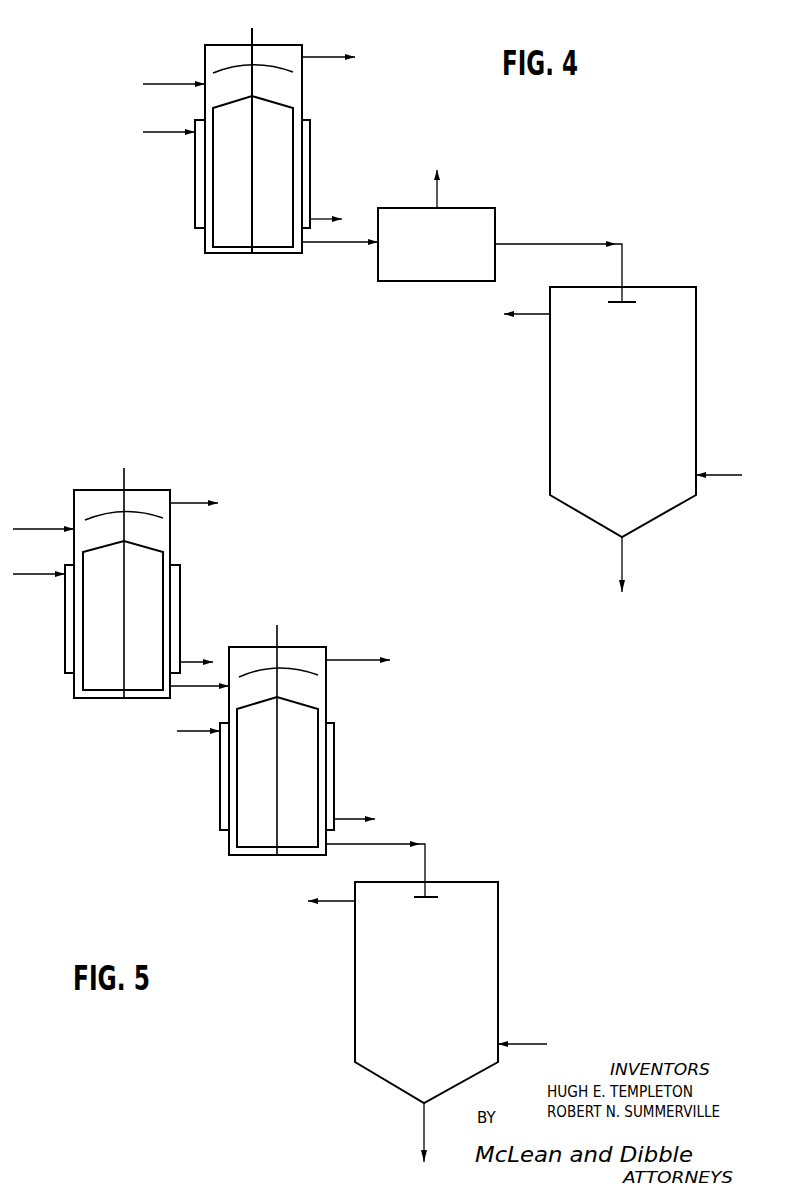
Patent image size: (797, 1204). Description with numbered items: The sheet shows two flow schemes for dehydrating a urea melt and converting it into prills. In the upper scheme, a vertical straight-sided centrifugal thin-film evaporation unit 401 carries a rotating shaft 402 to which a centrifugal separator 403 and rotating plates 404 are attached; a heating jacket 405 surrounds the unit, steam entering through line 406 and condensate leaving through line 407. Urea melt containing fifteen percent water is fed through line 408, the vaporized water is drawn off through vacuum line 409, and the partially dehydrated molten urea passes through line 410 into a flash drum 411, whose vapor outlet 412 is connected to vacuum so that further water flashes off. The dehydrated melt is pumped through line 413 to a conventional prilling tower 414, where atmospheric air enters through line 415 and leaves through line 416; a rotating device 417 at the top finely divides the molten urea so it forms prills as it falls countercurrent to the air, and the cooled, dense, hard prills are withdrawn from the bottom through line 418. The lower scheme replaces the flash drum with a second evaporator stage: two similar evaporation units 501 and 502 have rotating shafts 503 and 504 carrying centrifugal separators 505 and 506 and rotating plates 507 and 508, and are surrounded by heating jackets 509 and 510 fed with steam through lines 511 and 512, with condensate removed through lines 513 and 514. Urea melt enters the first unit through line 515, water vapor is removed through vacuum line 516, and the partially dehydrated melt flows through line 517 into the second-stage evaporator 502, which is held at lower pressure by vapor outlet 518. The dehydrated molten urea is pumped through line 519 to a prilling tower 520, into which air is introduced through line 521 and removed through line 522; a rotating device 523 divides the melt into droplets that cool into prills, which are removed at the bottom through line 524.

In FIG. 4, the centrifugal thin-film evaporation unit 401 is at (272, 45).
In FIG. 4, the rotating shaft 402 is at (252, 38).
In FIG. 4, the centrifugal separator 403 is at (294, 74).
In FIG. 4, the rotating plates 404 is at (243, 188).
In FIG. 4, the heating jacket 405 is at (198, 182).
In FIG. 4, the steam line 406 is at (174, 132).
In FIG. 4, the condensate line 407 is at (323, 219).
In FIG. 4, the urea melt feed line 408 is at (172, 83).
In FIG. 4, the water vapor line 409 is at (310, 57).
In FIG. 4, the partially dehydrated urea line 410 is at (351, 243).
In FIG. 4, the flash drum 411 is at (495, 270).
In FIG. 4, the vapor outlet 412 is at (437, 197).
In FIG. 4, the dehydrated urea line 413 is at (622, 276).
In FIG. 4, the prilling tower 414 is at (696, 402).
In FIG. 4, the air inlet line 415 is at (735, 475).
In FIG. 4, the air outlet line 416 is at (525, 315).
In FIG. 4, the rotating device 417 is at (635, 304).
In FIG. 4, the prill outlet line 418 is at (622, 546).
In FIG. 5, the first-stage centrifugal thin-film evaporation unit 501 is at (170, 476).
In FIG. 5, the second-stage evaporator 502 is at (312, 647).
In FIG. 5, the rotating shaft 503 is at (124, 478).
In FIG. 5, the rotating shaft 504 is at (278, 643).
In FIG. 5, the centrifugal separator 505 is at (162, 519).
In FIG. 5, the centrifugal separator 506 is at (318, 676).
In FIG. 5, the rotating plates 507 is at (109, 630).
In FIG. 5, the rotating plates 508 is at (267, 785).
In FIG. 5, the heating jacket 509 is at (69, 637).
In FIG. 5, the heating jacket 510 is at (225, 773).
In FIG. 5, the steam line 511 is at (39, 575).
In FIG. 5, the steam line 512 is at (197, 732).
In FIG. 5, the condensate line 513 is at (188, 659).
In FIG. 5, the condensate line 514 is at (352, 818).
In FIG. 5, the urea melt feed line 515 is at (43, 529).
In FIG. 5, the water vapor line 516 is at (200, 504).
In FIG. 5, the partially dehydrated urea line 517 is at (208, 688).
In FIG. 5, the vapor outlet 518 is at (364, 660).
In FIG. 5, the dehydrated urea line 519 is at (427, 858).
In FIG. 5, the prilling tower 520 is at (498, 966).
In FIG. 5, the air inlet line 521 is at (549, 1030).
In FIG. 5, the air outlet line 522 is at (333, 902).
In FIG. 5, the rotating device 523 is at (417, 898).
In FIG. 5, the prill outlet line 524 is at (424, 1120).